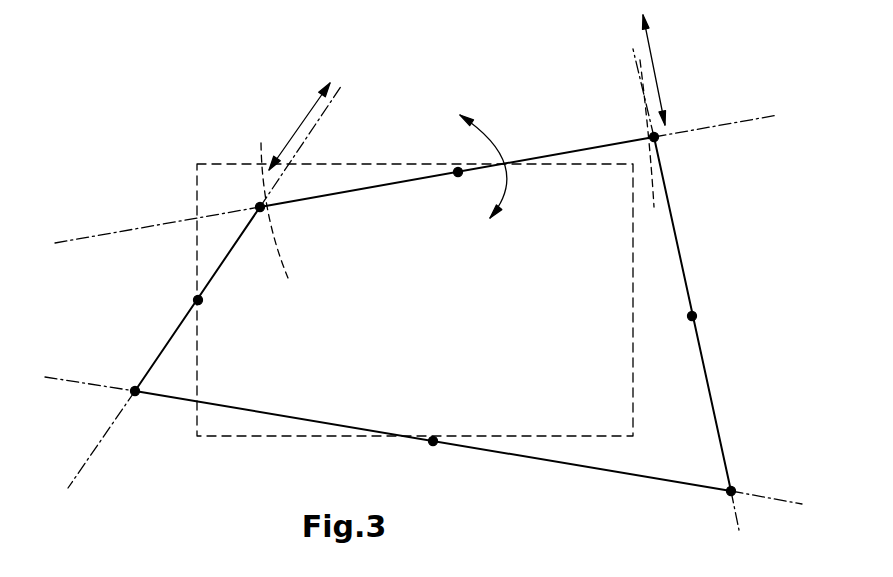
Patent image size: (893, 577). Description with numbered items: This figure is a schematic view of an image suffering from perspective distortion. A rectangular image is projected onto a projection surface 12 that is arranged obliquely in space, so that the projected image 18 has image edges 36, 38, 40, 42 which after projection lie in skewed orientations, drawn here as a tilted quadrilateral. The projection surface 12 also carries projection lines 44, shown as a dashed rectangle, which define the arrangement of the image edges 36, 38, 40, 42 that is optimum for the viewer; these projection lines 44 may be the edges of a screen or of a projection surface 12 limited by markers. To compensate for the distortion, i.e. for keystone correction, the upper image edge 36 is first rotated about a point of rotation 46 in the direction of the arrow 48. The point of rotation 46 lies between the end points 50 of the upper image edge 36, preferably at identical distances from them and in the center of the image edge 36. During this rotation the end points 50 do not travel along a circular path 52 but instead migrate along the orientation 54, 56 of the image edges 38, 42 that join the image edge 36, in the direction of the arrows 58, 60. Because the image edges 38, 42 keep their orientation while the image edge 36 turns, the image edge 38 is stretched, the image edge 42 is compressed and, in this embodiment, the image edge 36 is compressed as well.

The projection surface 12 is at (428, 301).
The projected image 18 is at (677, 426).
The upper image edge 36 is at (565, 150).
The image edge 38 is at (160, 352).
The image edge 40 is at (515, 455).
The image edge 42 is at (677, 235).
The projection lines 44 is at (197, 192).
The point of rotation 46 is at (458, 172).
The arrow 48 is at (517, 178).
The end points 50 is at (262, 207).
The circular path 52 is at (280, 258).
The orientation 54 is at (330, 135).
The orientation 56 is at (637, 64).
The arrow 58 is at (296, 133).
The arrow 60 is at (657, 72).